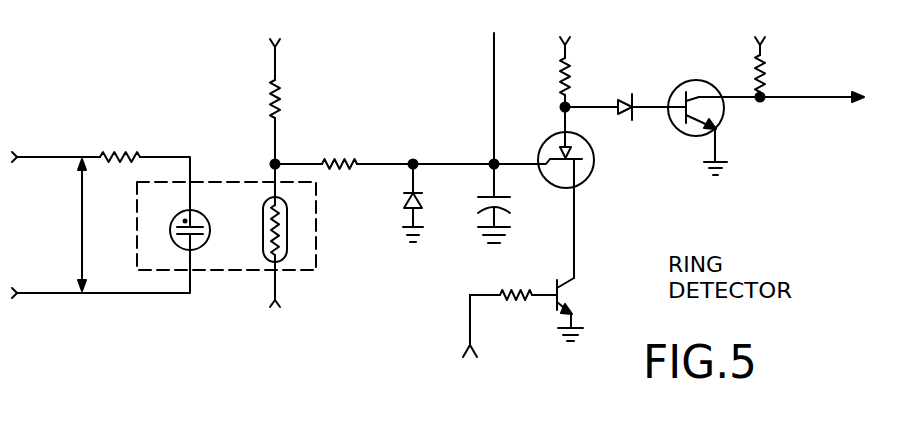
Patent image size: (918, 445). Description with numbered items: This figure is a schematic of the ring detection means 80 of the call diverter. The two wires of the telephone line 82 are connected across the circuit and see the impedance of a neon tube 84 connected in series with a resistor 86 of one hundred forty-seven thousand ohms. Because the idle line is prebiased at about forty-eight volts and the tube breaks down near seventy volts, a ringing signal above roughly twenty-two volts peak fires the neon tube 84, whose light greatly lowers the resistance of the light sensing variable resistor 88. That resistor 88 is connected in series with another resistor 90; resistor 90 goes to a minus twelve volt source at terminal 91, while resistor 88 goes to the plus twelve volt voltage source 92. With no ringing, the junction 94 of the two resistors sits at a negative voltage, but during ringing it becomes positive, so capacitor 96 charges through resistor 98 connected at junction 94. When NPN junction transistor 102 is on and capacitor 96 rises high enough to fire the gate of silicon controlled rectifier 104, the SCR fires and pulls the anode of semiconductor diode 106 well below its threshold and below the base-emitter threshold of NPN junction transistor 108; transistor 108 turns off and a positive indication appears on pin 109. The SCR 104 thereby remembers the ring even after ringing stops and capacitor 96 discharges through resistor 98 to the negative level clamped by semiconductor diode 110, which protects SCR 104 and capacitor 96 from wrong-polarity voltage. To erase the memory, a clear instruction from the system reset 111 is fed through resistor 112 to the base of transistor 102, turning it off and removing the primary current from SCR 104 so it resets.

The ring detection means 80 is at (188, 83).
The telephone line 82 is at (68, 225).
The neon tube 84 is at (204, 222).
The resistor 86 is at (139, 155).
The light sensing variable resistor 88 is at (290, 206).
The resistor 90 is at (284, 91).
The -12V supply terminal 91 is at (303, 50).
The voltage source 92 is at (290, 288).
The junction 94 is at (282, 161).
The capacitor 96 is at (504, 188).
The resistor 98 is at (358, 160).
The NPN junction transistor 102 is at (575, 312).
The silicon controlled rectifier 104 is at (593, 137).
The semiconductor diode 106 is at (620, 98).
The NPN junction transistor 108 is at (718, 80).
The pin 109 is at (862, 90).
The semiconductor diode 110 is at (428, 203).
The system reset 111 is at (478, 352).
The resistor 112 is at (500, 270).